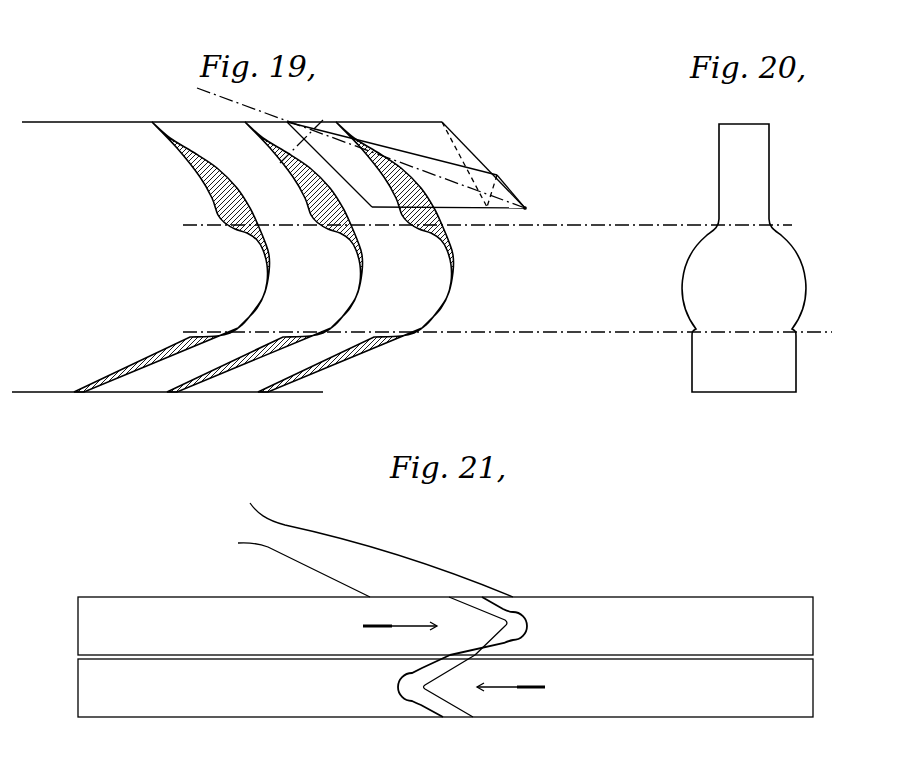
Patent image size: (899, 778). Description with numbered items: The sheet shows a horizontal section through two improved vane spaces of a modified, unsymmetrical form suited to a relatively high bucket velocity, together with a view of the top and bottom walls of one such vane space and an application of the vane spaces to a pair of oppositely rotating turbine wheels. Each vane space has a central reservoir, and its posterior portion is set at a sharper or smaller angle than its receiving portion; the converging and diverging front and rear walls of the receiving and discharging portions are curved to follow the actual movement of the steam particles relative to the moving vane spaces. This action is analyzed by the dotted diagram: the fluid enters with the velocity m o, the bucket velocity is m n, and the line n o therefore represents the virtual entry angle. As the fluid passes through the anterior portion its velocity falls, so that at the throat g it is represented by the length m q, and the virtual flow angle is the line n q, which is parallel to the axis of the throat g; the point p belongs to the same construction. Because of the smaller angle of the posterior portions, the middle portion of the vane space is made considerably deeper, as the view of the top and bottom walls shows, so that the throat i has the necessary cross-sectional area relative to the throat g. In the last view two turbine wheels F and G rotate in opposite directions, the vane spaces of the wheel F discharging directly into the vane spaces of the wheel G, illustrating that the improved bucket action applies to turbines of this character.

In FIG. 19, the diagram point m is at (361, 148).
In FIG. 19, the diagram point n is at (483, 154).
In FIG. 19, the diagram point p is at (506, 180).
In FIG. 19, the diagram point q is at (448, 206).
In FIG. 19, the diagram point o is at (530, 207).
In FIG. 19, the throat of anterior portion g is at (390, 250).
In FIG. 19, the throat of posterior portion i is at (264, 257).
In FIG. 21, the turbine wheel F is at (462, 626).
In FIG. 21, the turbine wheel G is at (458, 686).